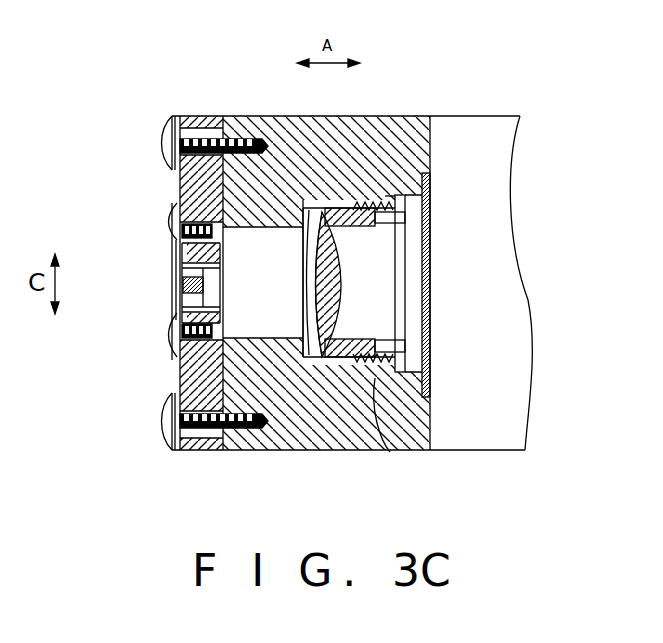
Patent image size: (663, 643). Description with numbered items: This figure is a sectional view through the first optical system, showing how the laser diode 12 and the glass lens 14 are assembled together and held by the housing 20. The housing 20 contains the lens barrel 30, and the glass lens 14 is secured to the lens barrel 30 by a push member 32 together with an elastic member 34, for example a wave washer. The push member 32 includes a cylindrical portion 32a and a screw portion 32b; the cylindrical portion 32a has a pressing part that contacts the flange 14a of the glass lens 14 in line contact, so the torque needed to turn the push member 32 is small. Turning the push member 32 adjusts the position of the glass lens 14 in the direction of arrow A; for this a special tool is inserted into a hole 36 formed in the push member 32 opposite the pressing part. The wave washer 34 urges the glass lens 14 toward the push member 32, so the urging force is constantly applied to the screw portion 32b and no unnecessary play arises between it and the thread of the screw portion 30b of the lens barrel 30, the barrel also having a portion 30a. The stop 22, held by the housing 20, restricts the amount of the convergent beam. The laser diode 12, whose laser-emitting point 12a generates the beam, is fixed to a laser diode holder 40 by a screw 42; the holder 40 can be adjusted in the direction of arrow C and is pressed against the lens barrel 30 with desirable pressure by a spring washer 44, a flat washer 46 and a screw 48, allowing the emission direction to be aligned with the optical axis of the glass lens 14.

The laser diode 12 is at (174, 273).
The laser-emitting point 12a is at (172, 290).
The glass lens 14 is at (350, 275).
The flange 14a is at (318, 210).
The housing 20 is at (490, 116).
The stop 22 is at (430, 368).
The lens barrel 30 is at (397, 116).
The housing upper portion 30a is at (332, 215).
The screw portion 30b is at (387, 197).
The push member 32 is at (368, 333).
The cylindrical portion 32a is at (355, 231).
The screw portion 32b is at (390, 452).
The elastic member 34 is at (357, 253).
The hole 36 is at (392, 208).
The laser diode holder 40 is at (208, 116).
The screw 42 is at (168, 222).
The spring washer 44 is at (177, 116).
The flat washer 46 is at (172, 116).
The screw 48 is at (163, 137).